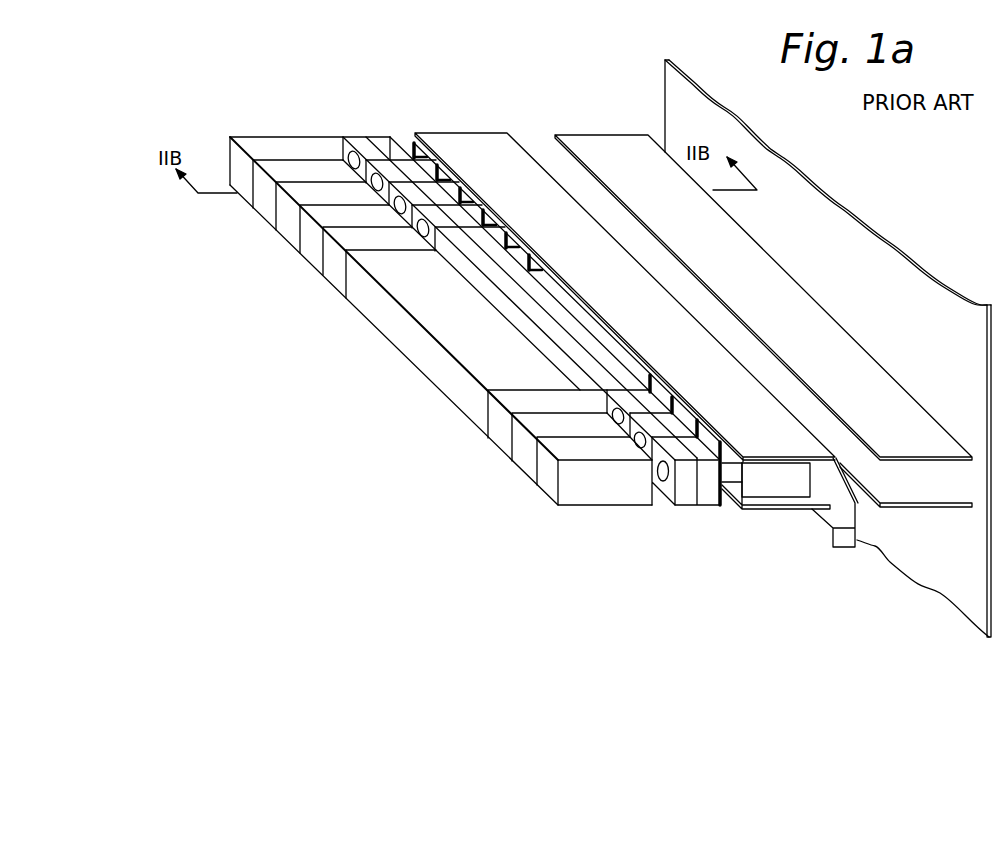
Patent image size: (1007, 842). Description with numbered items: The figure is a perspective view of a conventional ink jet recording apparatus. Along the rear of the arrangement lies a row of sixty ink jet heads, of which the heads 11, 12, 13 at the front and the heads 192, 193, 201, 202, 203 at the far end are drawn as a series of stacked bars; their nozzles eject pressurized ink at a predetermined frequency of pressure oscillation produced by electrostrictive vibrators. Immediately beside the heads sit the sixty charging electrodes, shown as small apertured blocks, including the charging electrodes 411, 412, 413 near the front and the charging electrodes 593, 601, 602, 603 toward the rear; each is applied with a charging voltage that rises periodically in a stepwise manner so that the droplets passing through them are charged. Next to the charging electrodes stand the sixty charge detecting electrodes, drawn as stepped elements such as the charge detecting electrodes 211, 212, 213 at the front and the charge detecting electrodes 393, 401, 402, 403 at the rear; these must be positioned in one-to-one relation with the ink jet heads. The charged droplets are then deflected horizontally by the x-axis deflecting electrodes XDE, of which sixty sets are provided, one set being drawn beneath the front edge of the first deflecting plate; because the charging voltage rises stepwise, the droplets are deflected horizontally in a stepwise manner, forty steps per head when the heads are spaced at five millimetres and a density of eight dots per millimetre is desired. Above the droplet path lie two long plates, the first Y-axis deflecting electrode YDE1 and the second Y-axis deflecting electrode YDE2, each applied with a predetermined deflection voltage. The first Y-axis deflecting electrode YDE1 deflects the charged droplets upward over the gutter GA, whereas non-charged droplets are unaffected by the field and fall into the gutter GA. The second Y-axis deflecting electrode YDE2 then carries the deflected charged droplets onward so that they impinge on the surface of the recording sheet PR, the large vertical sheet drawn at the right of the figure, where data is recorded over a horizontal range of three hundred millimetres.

The ink jet head 11 is at (550, 482).
The ink jet head 12 is at (527, 455).
The ink jet head 13 is at (500, 437).
The ink jet head 192 is at (345, 283).
The ink jet head 193 is at (315, 258).
The ink jet head 201 is at (293, 240).
The ink jet head 202 is at (272, 210).
The ink jet head 203 is at (248, 192).
The charge detecting electrode 211 is at (710, 497).
The charge detecting electrode 212 is at (683, 407).
The charge detecting electrode 213 is at (656, 396).
The charge detecting electrode 393 is at (474, 216).
The charge detecting electrode 401 is at (445, 192).
The charge detecting electrode 402 is at (432, 172).
The charge detecting electrode 403 is at (386, 140).
The charging electrode 411 is at (684, 493).
The charging electrode 412 is at (653, 425).
The charging electrode 413 is at (605, 397).
The charging electrode 593 is at (430, 226).
The charging electrode 601 is at (402, 202).
The charging electrode 602 is at (360, 178).
The charging electrode 603 is at (358, 143).
The first Y-axis deflecting electrode YDE1 is at (636, 304).
The second Y-axis deflecting electrode YDE2 is at (790, 324).
The x-axis deflecting electrode XDE is at (779, 477).
The gutter GA is at (845, 547).
The recording sheet PR is at (857, 208).